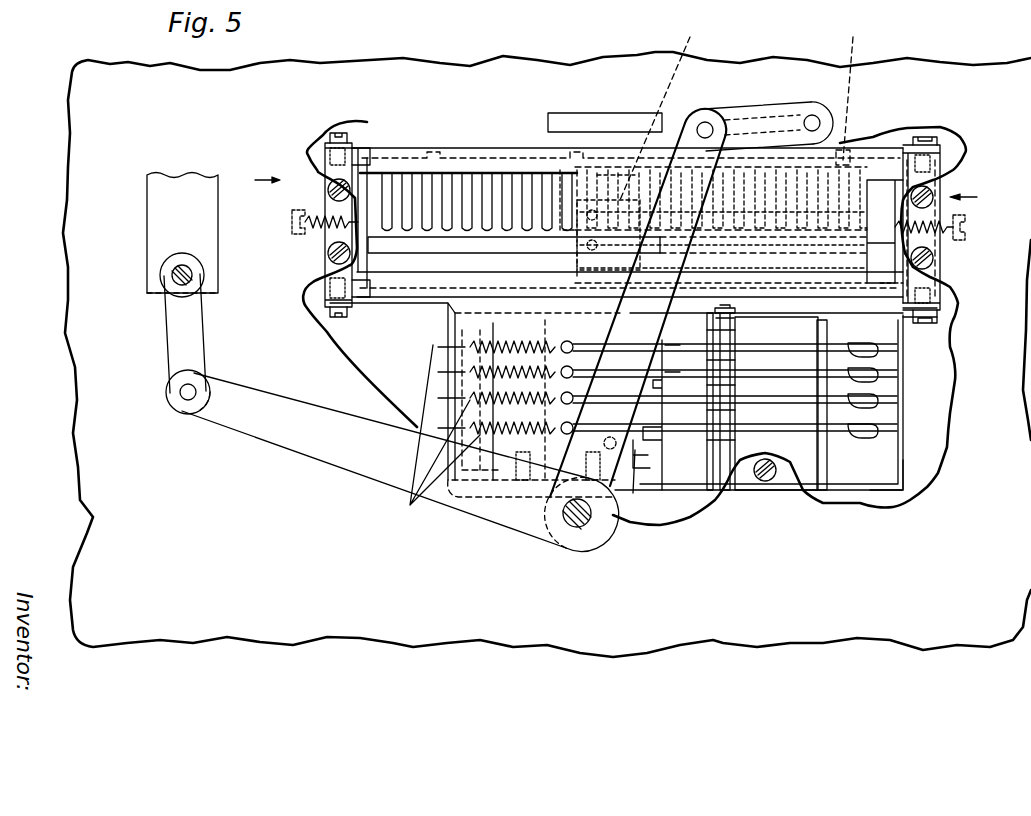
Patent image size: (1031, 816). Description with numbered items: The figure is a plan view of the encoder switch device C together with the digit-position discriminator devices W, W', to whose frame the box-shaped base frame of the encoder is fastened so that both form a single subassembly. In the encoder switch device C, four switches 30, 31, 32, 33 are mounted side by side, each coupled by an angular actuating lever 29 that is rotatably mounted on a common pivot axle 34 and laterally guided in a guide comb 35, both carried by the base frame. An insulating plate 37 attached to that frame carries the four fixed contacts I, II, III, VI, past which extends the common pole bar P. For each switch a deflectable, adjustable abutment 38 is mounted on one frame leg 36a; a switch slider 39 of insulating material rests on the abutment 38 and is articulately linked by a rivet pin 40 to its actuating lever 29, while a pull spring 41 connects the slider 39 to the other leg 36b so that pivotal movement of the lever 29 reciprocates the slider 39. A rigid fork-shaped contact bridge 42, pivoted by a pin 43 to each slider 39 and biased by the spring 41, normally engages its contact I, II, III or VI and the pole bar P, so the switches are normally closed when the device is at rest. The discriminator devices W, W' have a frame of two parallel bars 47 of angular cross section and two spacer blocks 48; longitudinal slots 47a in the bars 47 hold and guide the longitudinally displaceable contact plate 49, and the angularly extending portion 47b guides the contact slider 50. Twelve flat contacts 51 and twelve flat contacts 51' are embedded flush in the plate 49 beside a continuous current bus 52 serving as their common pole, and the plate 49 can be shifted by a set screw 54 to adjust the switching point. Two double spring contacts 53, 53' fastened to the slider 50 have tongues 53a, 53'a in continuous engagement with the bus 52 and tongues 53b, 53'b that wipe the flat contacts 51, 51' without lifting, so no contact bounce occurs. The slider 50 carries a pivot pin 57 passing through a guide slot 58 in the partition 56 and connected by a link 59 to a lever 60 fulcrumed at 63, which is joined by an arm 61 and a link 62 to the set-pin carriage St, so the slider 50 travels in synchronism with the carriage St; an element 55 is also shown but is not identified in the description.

The actuating lever 29 is at (817, 423).
The switch 30 is at (430, 427).
The switch 31 is at (430, 396).
The switch 32 is at (430, 370).
The switch 33 is at (430, 345).
The pivot axle 34 is at (733, 328).
The guide comb 35 is at (823, 467).
The leg of the frame 36a is at (897, 455).
The other leg of the frame 36b is at (445, 318).
The insulating plate 37 is at (508, 323).
The abutment 38 is at (893, 413).
The switch slider 39 is at (697, 403).
The rivet pin 40 is at (742, 403).
The pull spring 41 is at (495, 437).
The contact bridge 42 is at (670, 345).
The pin 43 is at (646, 454).
The bar 47 is at (328, 150).
The longitudinal slot 47a is at (427, 147).
The angularly extending portion 47b is at (360, 162).
The spacer block 48 is at (296, 235).
The contact plate 49 is at (378, 180).
The contact slider 50 is at (853, 88).
The flat contact 51 is at (731, 146).
The flat contact 51' is at (619, 131).
The current bus 52 is at (632, 323).
The double spring contact 53 is at (723, 221).
The double spring contact 53' is at (668, 236).
The contact tongue 53a is at (933, 273).
The contact tongue 53b is at (887, 197).
The contact tongue 53'a is at (533, 161).
The contact tongue 53'b is at (620, 128).
The set screw 54 is at (300, 215).
The guide screw 55 is at (345, 202).
The partition 56 is at (1003, 78).
The pivot pin 57 is at (810, 113).
The guide slot 58 is at (583, 117).
The link 59 is at (773, 110).
The lever 60 is at (695, 140).
The arm 61 is at (317, 443).
The link 62 is at (178, 343).
The fulcrum 63 is at (570, 522).
The set-pin carriage St is at (180, 192).
The digit-position discriminator device W is at (977, 198).
The digit-position discriminator device W' is at (252, 179).
The encoder switch device C is at (890, 473).
The pole bar P is at (620, 477).
The fixed contact I is at (570, 460).
The fixed contact II is at (543, 452).
The fixed contact III is at (532, 324).
The fixed contact VI is at (582, 324).